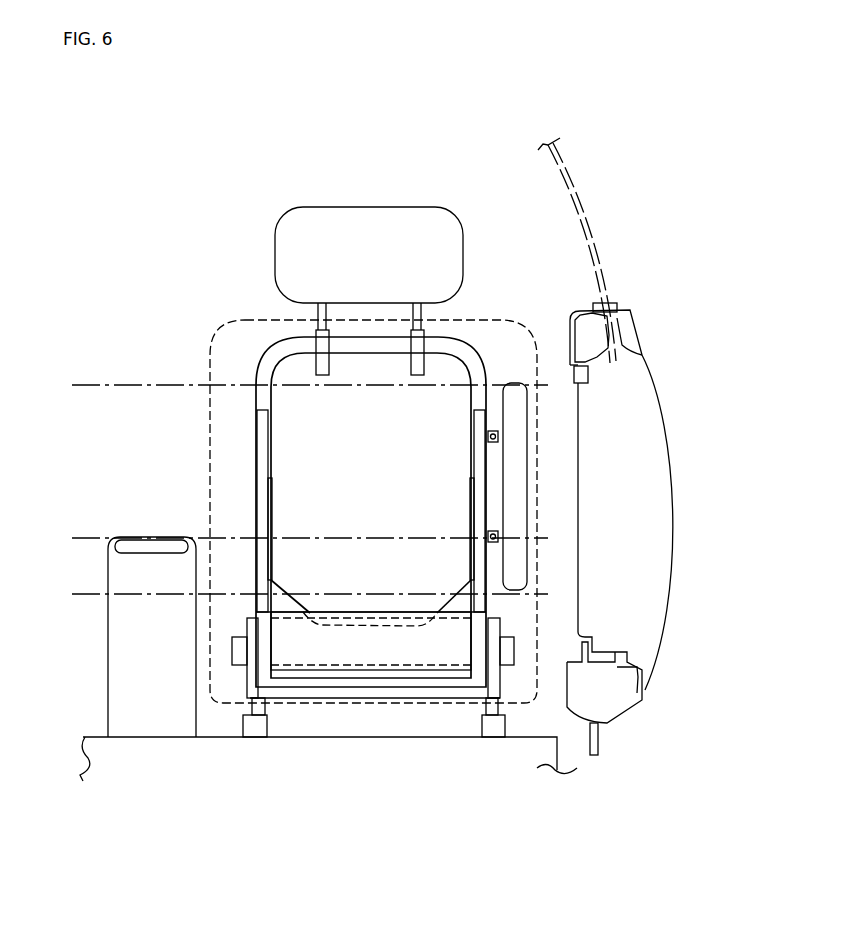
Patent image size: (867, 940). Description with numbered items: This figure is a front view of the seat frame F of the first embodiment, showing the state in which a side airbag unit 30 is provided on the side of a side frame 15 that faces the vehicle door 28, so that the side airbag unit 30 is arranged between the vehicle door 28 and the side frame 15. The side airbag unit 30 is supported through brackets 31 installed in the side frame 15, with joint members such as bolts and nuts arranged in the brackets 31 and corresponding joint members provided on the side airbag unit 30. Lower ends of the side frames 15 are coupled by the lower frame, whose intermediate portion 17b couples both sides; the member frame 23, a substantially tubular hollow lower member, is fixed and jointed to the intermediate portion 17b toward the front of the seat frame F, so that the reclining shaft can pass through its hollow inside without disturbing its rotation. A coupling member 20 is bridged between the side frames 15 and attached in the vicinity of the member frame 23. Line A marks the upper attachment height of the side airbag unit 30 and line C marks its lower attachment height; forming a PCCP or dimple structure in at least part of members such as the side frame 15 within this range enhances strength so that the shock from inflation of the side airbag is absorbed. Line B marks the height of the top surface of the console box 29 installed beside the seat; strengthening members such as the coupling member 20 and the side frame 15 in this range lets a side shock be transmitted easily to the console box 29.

The side frame 15 is at (483, 500).
The intermediate portion 17b is at (292, 601).
The coupling member 20 is at (433, 672).
The member frame 23 is at (290, 650).
The vehicle door 28 is at (648, 447).
The console box 29 is at (123, 688).
The side airbag unit 30 is at (520, 397).
The bracket 31 is at (492, 430).
The seat frame F is at (248, 357).
The line A is at (301, 388).
The line B is at (301, 543).
The line C is at (301, 598).